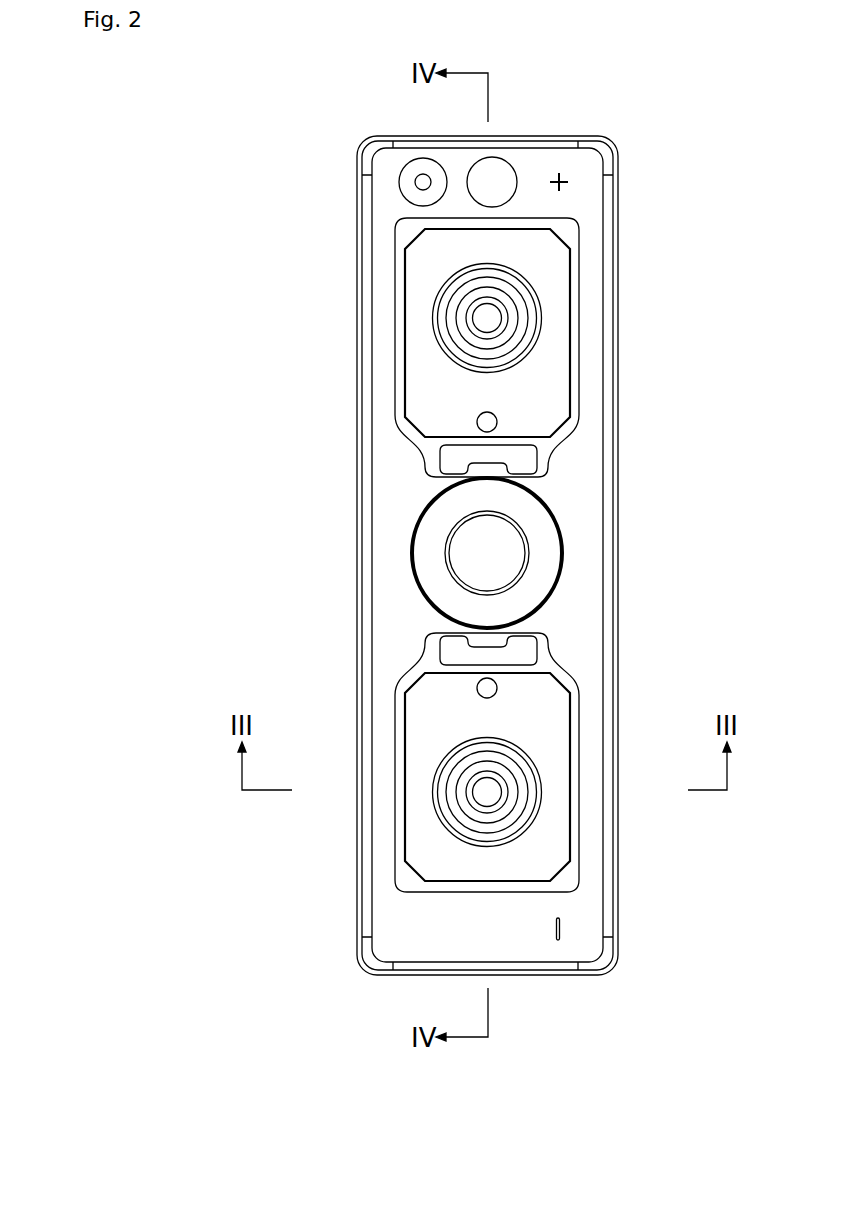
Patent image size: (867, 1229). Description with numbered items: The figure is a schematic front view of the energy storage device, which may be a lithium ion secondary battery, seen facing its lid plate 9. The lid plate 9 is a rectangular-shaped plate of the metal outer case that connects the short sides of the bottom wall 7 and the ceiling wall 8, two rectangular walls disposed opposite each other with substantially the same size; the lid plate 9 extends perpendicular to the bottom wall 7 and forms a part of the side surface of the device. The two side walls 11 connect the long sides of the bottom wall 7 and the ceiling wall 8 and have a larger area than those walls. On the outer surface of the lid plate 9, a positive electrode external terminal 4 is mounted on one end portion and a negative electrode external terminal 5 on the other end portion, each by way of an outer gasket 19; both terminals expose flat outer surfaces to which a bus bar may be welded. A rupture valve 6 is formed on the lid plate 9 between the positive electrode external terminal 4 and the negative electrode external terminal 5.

The positive electrode external terminal 4 is at (420, 272).
The negative electrode external terminal 5 is at (420, 717).
The rupture valve 6 is at (548, 550).
The bottom wall 7 is at (412, 975).
The ceiling wall 8 is at (425, 136).
The lid plate 9 is at (390, 480).
The side wall 11 is at (358, 554).
The outer gasket 19 is at (407, 233).